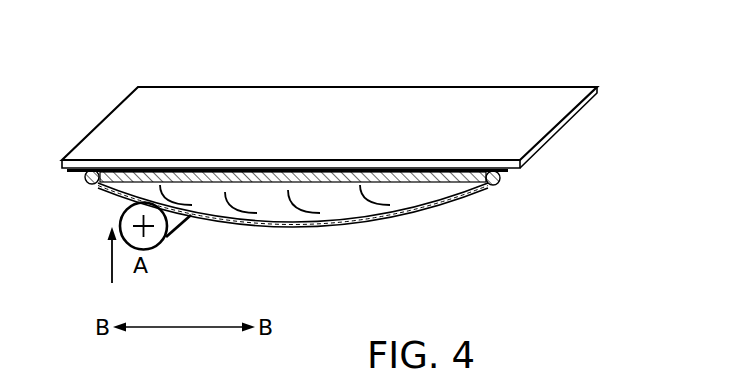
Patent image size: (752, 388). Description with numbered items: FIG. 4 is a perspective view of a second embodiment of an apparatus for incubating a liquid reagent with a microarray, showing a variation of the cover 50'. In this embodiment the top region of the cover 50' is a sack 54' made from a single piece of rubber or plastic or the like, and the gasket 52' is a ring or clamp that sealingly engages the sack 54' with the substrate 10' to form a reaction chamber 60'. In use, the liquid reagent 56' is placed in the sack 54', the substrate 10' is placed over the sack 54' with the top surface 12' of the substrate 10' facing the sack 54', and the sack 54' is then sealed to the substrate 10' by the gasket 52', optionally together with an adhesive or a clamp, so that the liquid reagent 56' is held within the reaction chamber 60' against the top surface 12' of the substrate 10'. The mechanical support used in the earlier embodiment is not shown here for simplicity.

The substrate 10' is at (345, 109).
The top surface 12' is at (320, 190).
The cover 50' is at (293, 228).
The gasket 52' is at (277, 173).
The sack 54' is at (367, 243).
The liquid reagent 56' is at (293, 217).
The reaction chamber 60' is at (314, 207).